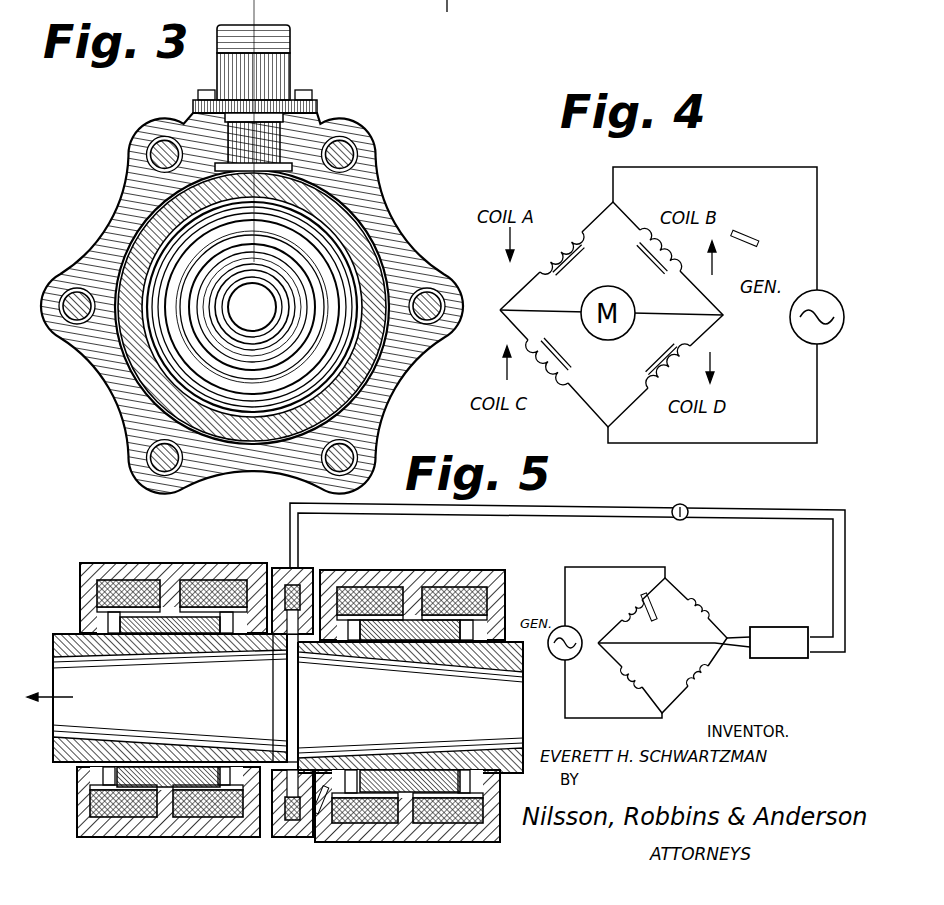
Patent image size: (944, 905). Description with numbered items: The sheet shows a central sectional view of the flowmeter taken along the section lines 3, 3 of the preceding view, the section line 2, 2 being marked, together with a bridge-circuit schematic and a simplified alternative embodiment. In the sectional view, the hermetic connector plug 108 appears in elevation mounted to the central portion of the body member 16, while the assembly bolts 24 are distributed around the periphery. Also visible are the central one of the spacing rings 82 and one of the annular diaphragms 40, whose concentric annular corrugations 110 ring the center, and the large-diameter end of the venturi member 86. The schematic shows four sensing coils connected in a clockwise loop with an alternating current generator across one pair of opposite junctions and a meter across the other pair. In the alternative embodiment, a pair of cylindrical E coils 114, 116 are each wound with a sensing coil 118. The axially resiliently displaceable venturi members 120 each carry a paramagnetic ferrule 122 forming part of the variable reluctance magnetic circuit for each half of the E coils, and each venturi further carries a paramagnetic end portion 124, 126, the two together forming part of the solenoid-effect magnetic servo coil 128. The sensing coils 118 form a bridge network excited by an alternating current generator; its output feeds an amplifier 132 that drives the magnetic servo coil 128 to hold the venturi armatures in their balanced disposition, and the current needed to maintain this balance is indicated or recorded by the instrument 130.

In FIG. 3, the section line 2- 2 is at (270, 245).
In FIG. 3, the section line 3- 3 is at (423, 6).
In FIG. 3, the body member 16 is at (337, 118).
In FIG. 3, the assembly bolts 24 is at (146, 151).
In FIG. 3, the annular diaphragm 40 is at (411, 243).
In FIG. 3, the spacing ring 82 is at (393, 211).
In FIG. 3, the venturi member 86 is at (300, 299).
In FIG. 3, the hermetic connector plug 108 is at (290, 72).
In FIG. 3, the concentric annular corrugations 110 is at (196, 357).
In FIG. 5, the cylindrical E coil 114 is at (153, 563).
In FIG. 5, the cylindrical E coil 116 is at (397, 570).
In FIG. 5, the sensing coil 118 is at (110, 587).
In FIG. 5, the venturi member 120 is at (70, 633).
In FIG. 5, the paramagnetic ferrule 122 is at (193, 617).
In FIG. 5, the paramagnetic end portion 124 is at (280, 653).
In FIG. 5, the paramagnetic end portion 126 is at (313, 653).
In FIG. 5, the magnetic servo coil 128 is at (303, 577).
In FIG. 5, the instrument 130 is at (688, 508).
In FIG. 5, the amplifier 132 is at (783, 660).